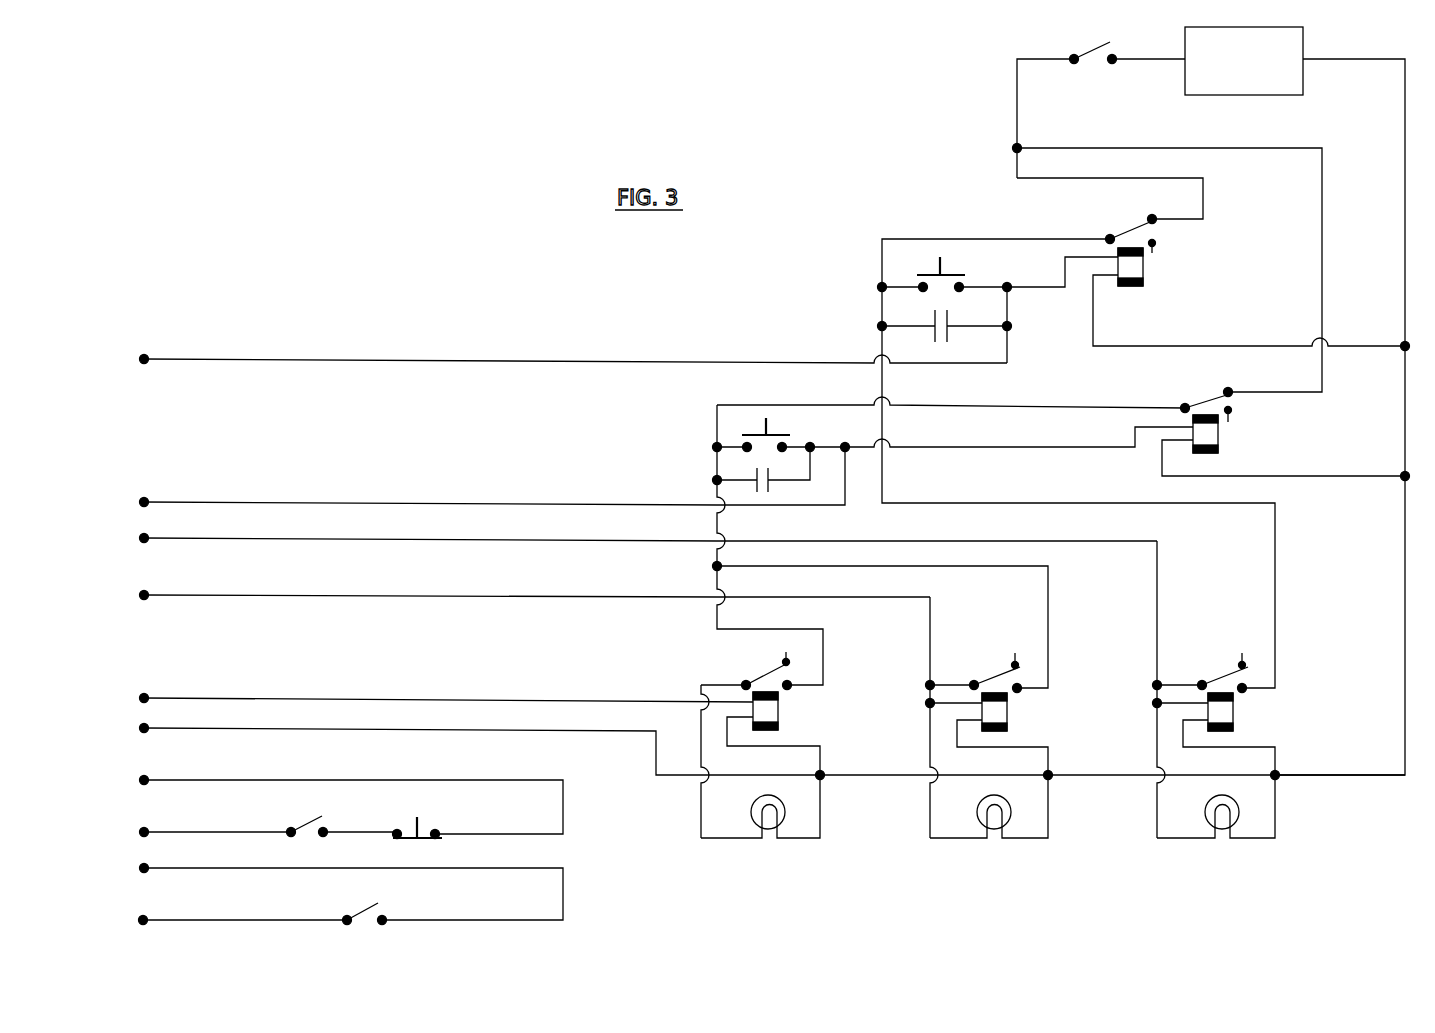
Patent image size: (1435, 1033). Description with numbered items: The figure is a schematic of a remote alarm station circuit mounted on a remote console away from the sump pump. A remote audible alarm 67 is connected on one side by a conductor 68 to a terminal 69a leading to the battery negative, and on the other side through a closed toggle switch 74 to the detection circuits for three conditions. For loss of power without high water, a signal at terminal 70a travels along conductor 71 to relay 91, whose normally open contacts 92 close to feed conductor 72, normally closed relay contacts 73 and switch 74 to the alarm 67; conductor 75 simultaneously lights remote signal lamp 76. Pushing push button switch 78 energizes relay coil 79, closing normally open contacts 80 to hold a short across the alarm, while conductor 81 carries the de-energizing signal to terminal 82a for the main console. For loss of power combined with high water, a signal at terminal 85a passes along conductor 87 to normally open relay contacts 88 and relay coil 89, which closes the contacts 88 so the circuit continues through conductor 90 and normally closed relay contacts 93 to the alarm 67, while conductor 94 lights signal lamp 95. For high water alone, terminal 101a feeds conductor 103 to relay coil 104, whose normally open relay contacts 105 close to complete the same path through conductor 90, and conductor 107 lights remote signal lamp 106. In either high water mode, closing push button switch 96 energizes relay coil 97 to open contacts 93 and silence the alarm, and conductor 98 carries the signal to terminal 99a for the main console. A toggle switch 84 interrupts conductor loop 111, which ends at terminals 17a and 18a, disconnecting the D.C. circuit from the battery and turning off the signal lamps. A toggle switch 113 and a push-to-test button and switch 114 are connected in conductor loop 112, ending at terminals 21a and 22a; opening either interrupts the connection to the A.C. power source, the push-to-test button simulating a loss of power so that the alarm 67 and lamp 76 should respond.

The toggle switch 74 is at (1088, 52).
The remote audible alarm device 67 is at (1305, 38).
The normally closed relay contacts 73 is at (1138, 232).
The push button switch 78 is at (942, 263).
The relay coil 79 is at (1144, 270).
The normally open contacts 80 is at (949, 336).
The conductor 81 is at (738, 358).
The terminal 82a is at (144, 359).
The normally closed relay contacts 93 is at (1210, 397).
The relay coil 97 is at (1219, 437).
The push button switch 96 is at (768, 423).
The conductor 72 is at (884, 466).
The conductor 98 is at (606, 500).
The terminal 99a is at (144, 502).
The conductor 90 is at (713, 525).
The conductor 71 is at (507, 538).
The terminal 70a is at (144, 538).
The conductor 87 is at (577, 594).
The terminal 85a is at (144, 595).
The conductor 75 is at (1155, 626).
The normally open contacts 92 is at (1225, 670).
The conductor 68 is at (1403, 612).
The conductor 94 is at (928, 643).
The normally open relay contacts 88 is at (1003, 670).
The relay contacts 105 is at (768, 673).
The terminal 101a is at (144, 698).
The conductor 103 is at (522, 698).
The relay coil 104 is at (778, 717).
The relay coil 89 is at (1008, 714).
The relay 91 is at (1234, 714).
The terminal 69a is at (144, 728).
The remote signal lamp 106 is at (752, 812).
The signal lamp 95 is at (978, 812).
The remote signal lamp 76 is at (1206, 812).
The conductor 107 is at (700, 800).
The terminal 22a is at (144, 780).
The terminal 21a is at (144, 832).
The terminal 18a is at (144, 868).
The terminal 17a is at (143, 920).
The toggle switch 113 is at (308, 820).
The push-to-test button and switch 114 is at (419, 822).
The conductor loop 112 is at (564, 817).
The conductor loop 111 is at (564, 895).
The toggle switch 84 is at (362, 905).